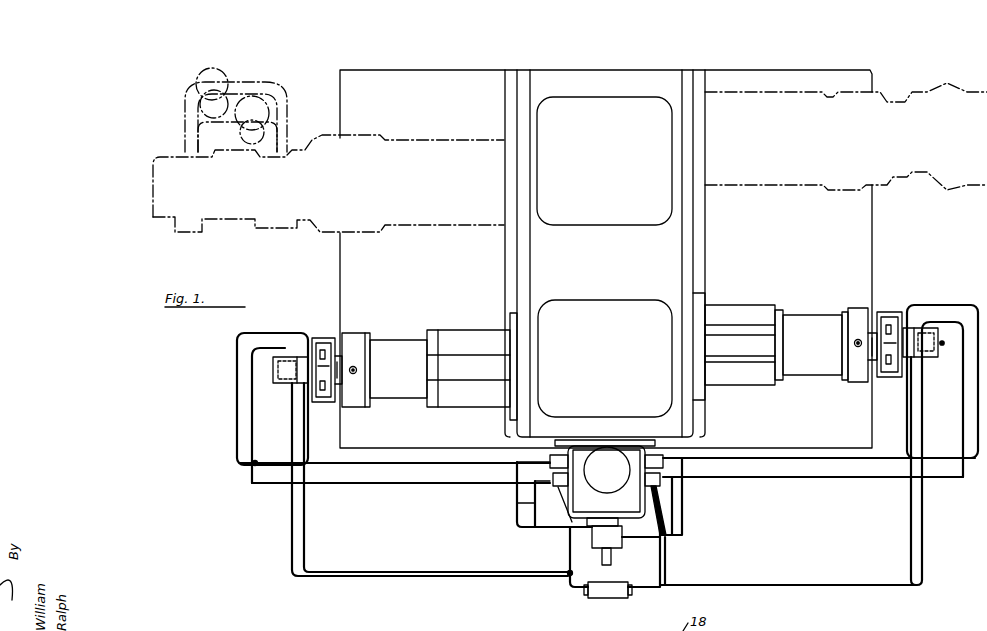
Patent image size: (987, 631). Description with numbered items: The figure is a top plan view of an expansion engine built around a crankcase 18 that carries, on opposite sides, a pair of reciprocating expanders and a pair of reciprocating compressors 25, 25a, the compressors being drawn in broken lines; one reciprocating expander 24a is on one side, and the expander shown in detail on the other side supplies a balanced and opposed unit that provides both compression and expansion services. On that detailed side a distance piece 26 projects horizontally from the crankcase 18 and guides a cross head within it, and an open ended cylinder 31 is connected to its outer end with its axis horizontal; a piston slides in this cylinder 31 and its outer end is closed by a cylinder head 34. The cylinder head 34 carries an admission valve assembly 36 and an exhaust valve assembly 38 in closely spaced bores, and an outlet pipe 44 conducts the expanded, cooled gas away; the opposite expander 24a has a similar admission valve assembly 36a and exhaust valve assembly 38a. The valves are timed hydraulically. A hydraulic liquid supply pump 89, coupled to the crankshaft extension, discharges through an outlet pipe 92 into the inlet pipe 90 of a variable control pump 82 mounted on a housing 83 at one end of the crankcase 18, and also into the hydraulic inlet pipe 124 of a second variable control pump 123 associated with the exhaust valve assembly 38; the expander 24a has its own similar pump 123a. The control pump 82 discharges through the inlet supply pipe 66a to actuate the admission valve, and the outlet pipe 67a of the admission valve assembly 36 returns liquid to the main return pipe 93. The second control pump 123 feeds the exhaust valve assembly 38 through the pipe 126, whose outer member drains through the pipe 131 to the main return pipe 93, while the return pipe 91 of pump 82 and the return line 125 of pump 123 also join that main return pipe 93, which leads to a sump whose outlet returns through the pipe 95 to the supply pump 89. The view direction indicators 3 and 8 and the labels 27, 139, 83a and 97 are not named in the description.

The crankcase 18 is at (683, 243).
The reciprocating compressor 25 is at (908, 98).
The reciprocating compressor 25a is at (418, 138).
The reciprocating expander 24a is at (444, 311).
The section view indicator 3 is at (653, 347).
The distance piece 26 is at (743, 305).
The piston rod 27 is at (810, 300).
The cylinder 31 is at (835, 298).
The cylinder head 34 is at (860, 308).
The outlet pipe 44 is at (854, 344).
The connector block 139 is at (890, 312).
The admission valve assembly 36 is at (935, 328).
The admission valve assembly 36a is at (276, 358).
The exhaust valve assembly 38 is at (934, 358).
The exhaust valve assembly 38a is at (278, 386).
The outlet pipe 67a is at (912, 400).
The inlet supply pipe 66a is at (899, 458).
The pipe 126 is at (834, 480).
The pipe 131 is at (926, 528).
The variable control pump 82 is at (650, 447).
The valve port 83a is at (565, 452).
The housing 83 is at (600, 509).
The second variable control pump 123 is at (660, 470).
The variable control pump 123a is at (570, 478).
The hydraulic inlet pipe 124 is at (650, 512).
The inlet pipe 90 is at (684, 490).
The hydraulic liquid supply pump 89 is at (615, 547).
The outlet pipe 92 is at (636, 537).
The pipe 95 is at (570, 556).
The filter 97 is at (590, 598).
The return line 125 is at (672, 552).
The return pipe 91 is at (676, 572).
The main return pipe 93 is at (786, 570).
The view direction arrow 8 is at (640, 621).